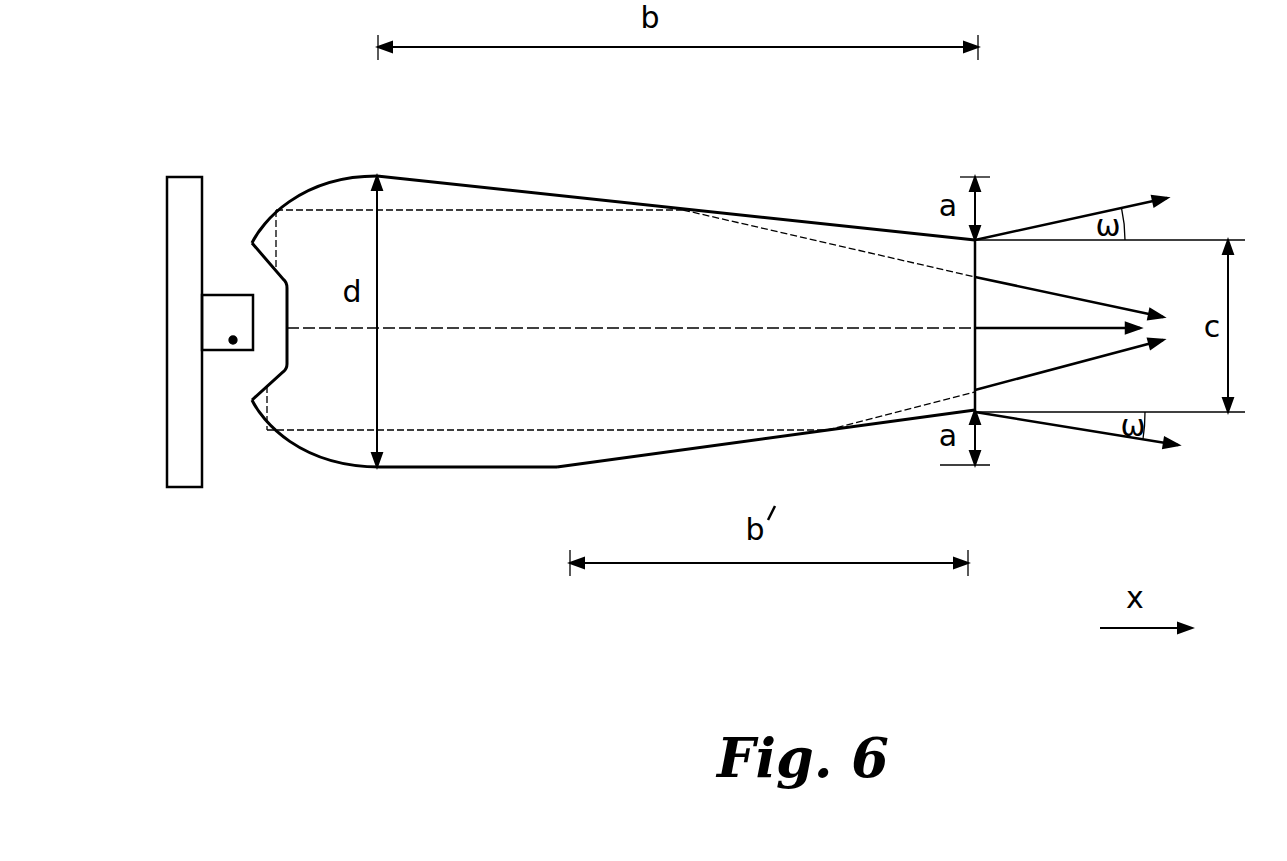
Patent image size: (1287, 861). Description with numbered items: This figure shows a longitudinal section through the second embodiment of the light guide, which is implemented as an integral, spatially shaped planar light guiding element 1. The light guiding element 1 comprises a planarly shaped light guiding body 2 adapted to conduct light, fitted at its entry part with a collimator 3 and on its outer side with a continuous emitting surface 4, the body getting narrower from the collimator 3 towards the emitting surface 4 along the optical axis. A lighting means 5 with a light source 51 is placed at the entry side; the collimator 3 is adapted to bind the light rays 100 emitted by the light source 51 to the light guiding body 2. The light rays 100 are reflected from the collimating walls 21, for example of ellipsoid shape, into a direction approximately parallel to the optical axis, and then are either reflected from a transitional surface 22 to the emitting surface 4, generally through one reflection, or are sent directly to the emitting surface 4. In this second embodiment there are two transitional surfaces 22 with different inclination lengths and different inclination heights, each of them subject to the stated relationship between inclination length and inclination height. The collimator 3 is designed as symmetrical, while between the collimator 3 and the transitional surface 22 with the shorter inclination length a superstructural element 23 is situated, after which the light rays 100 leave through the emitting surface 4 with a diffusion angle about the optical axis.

The light guiding element 1 is at (500, 188).
The light guiding body 2 is at (683, 280).
The collimator 3 is at (293, 192).
The emitting surface 4 is at (984, 399).
The lighting means 5 is at (188, 168).
The light source 51 is at (233, 340).
The collimating wall 21 is at (293, 452).
The transitional surface 22 is at (610, 198).
The superstructural element 23 is at (458, 465).
The light rays 100 is at (1023, 287).